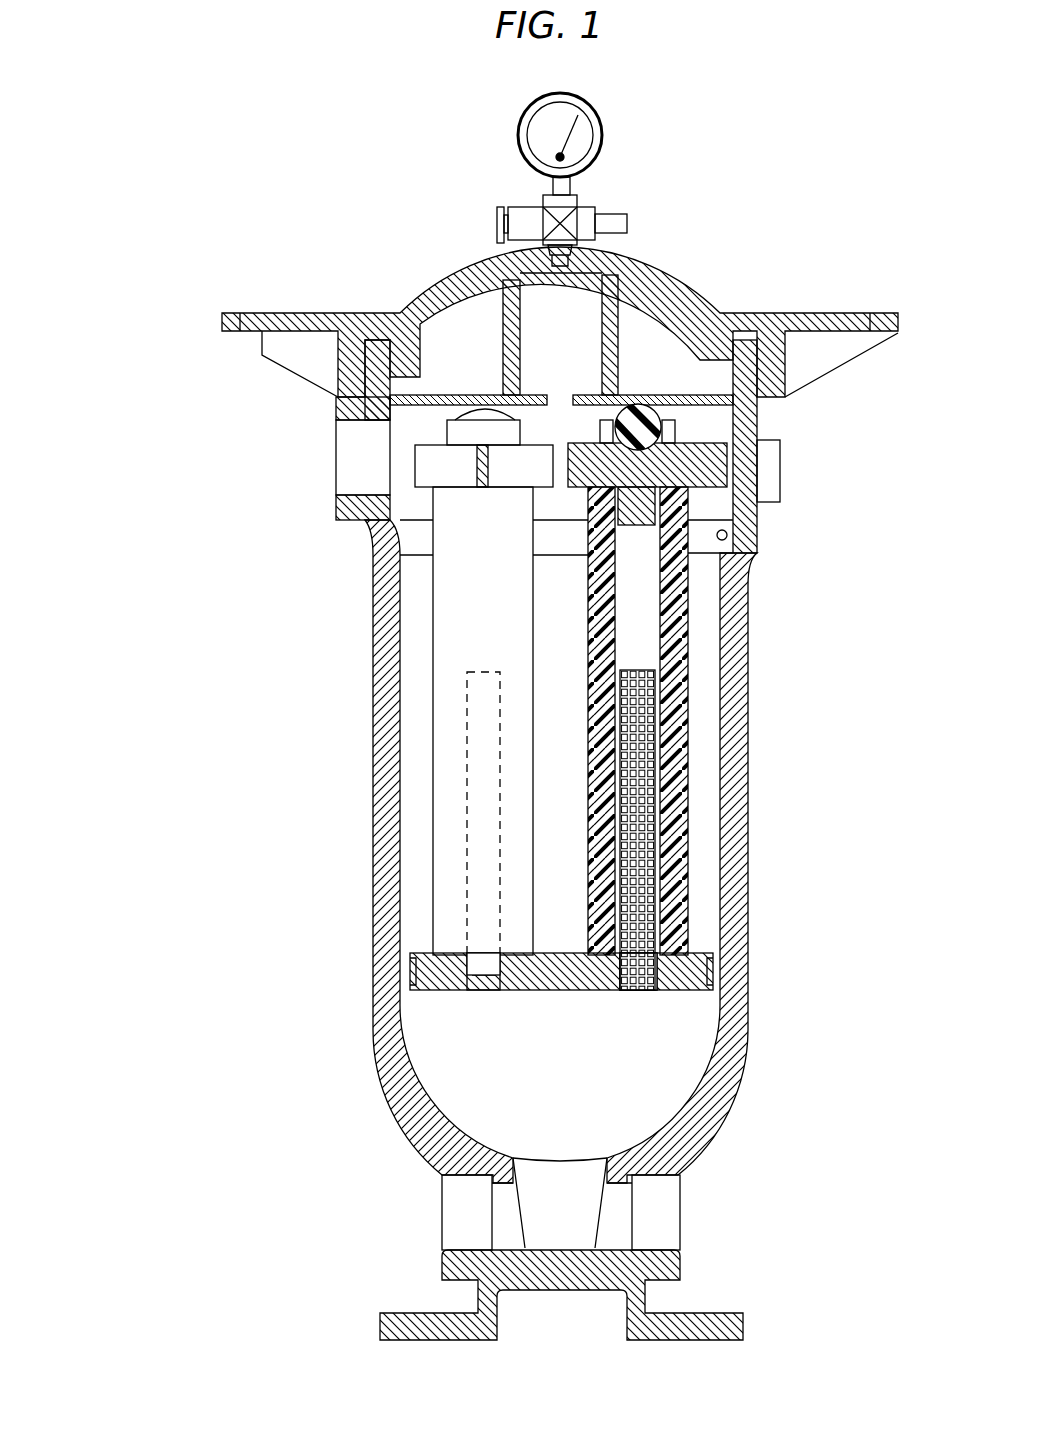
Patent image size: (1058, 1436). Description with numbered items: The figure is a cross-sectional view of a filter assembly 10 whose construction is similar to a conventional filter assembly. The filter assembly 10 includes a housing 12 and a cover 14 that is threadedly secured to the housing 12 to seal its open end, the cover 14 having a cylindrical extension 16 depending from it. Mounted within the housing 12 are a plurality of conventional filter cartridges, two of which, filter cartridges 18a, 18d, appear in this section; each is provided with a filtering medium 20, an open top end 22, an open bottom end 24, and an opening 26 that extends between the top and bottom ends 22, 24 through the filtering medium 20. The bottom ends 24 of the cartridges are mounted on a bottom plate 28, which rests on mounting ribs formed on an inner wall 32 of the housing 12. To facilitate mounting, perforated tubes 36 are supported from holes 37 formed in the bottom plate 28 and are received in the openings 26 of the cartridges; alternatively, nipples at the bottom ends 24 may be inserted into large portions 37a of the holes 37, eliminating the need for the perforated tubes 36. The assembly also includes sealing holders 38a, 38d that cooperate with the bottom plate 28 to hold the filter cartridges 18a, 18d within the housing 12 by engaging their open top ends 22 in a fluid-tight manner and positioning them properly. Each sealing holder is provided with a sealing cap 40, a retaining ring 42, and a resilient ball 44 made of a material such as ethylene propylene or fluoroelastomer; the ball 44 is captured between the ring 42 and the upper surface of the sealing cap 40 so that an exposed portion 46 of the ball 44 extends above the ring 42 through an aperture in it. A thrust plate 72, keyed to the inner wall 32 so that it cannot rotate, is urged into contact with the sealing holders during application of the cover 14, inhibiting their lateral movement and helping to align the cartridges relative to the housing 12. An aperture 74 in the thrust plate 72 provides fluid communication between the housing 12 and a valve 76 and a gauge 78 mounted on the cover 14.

The filter assembly 10 is at (180, 413).
The housing 12 is at (599, 930).
The cover 14 is at (438, 276).
The cylindrical extension 16 is at (618, 340).
The filter cartridge 18a is at (556, 737).
The filter cartridge 18d is at (647, 644).
The filtering medium 20 is at (450, 773).
The open top end 22 is at (450, 505).
The open bottom end 24 is at (448, 932).
The opening 26 is at (642, 600).
The bottom plate 28 is at (557, 990).
The inner wall 32 is at (726, 716).
The perforated tube 36 is at (640, 670).
The hole 37 is at (455, 985).
The large portion of hole 37a is at (490, 955).
The sealing holder 38a is at (432, 428).
The sealing holder 38d is at (692, 430).
The sealing cap 40 is at (515, 468).
The retaining ring 42 is at (508, 432).
The resilient ball 44 is at (503, 408).
The exposed portion 46 is at (485, 412).
The thrust plate 72 is at (452, 395).
The aperture 74 is at (563, 398).
The valve 76 is at (600, 232).
The gauge 78 is at (603, 128).